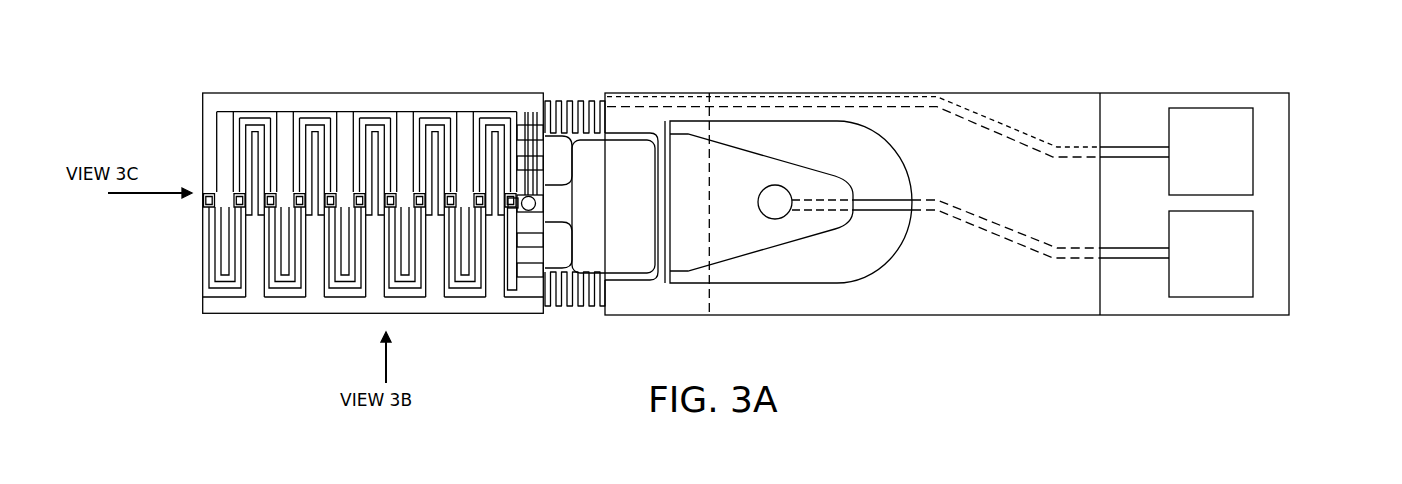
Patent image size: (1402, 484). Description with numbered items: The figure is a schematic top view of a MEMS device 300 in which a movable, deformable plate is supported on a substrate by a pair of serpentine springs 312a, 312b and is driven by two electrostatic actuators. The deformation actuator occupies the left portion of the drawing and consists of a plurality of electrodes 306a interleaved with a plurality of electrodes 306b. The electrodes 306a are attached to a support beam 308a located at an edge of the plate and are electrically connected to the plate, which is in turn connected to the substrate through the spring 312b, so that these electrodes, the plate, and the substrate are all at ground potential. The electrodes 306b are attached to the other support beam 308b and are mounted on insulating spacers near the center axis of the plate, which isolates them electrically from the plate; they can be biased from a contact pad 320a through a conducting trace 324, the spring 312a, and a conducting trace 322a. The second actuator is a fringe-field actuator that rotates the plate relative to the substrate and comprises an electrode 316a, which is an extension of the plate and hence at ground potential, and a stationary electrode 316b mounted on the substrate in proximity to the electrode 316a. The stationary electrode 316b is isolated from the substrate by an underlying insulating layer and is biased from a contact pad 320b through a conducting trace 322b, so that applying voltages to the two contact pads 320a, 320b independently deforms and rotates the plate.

The MEMS device 300 is at (1013, 361).
The electrodes 306a is at (286, 130).
The electrodes 306b is at (262, 130).
The support beam 308a is at (345, 103).
The support beam 308b is at (430, 300).
The serpentine spring 312a is at (575, 100).
The serpentine spring 312b is at (580, 307).
The electrode 316a is at (622, 232).
The stationary electrode 316b is at (740, 162).
The contact pad 320a is at (1205, 128).
The contact pad 320b is at (1238, 238).
The conducting trace 322a is at (940, 97).
The conducting trace 322b is at (942, 215).
The conducting trace 324 is at (530, 110).